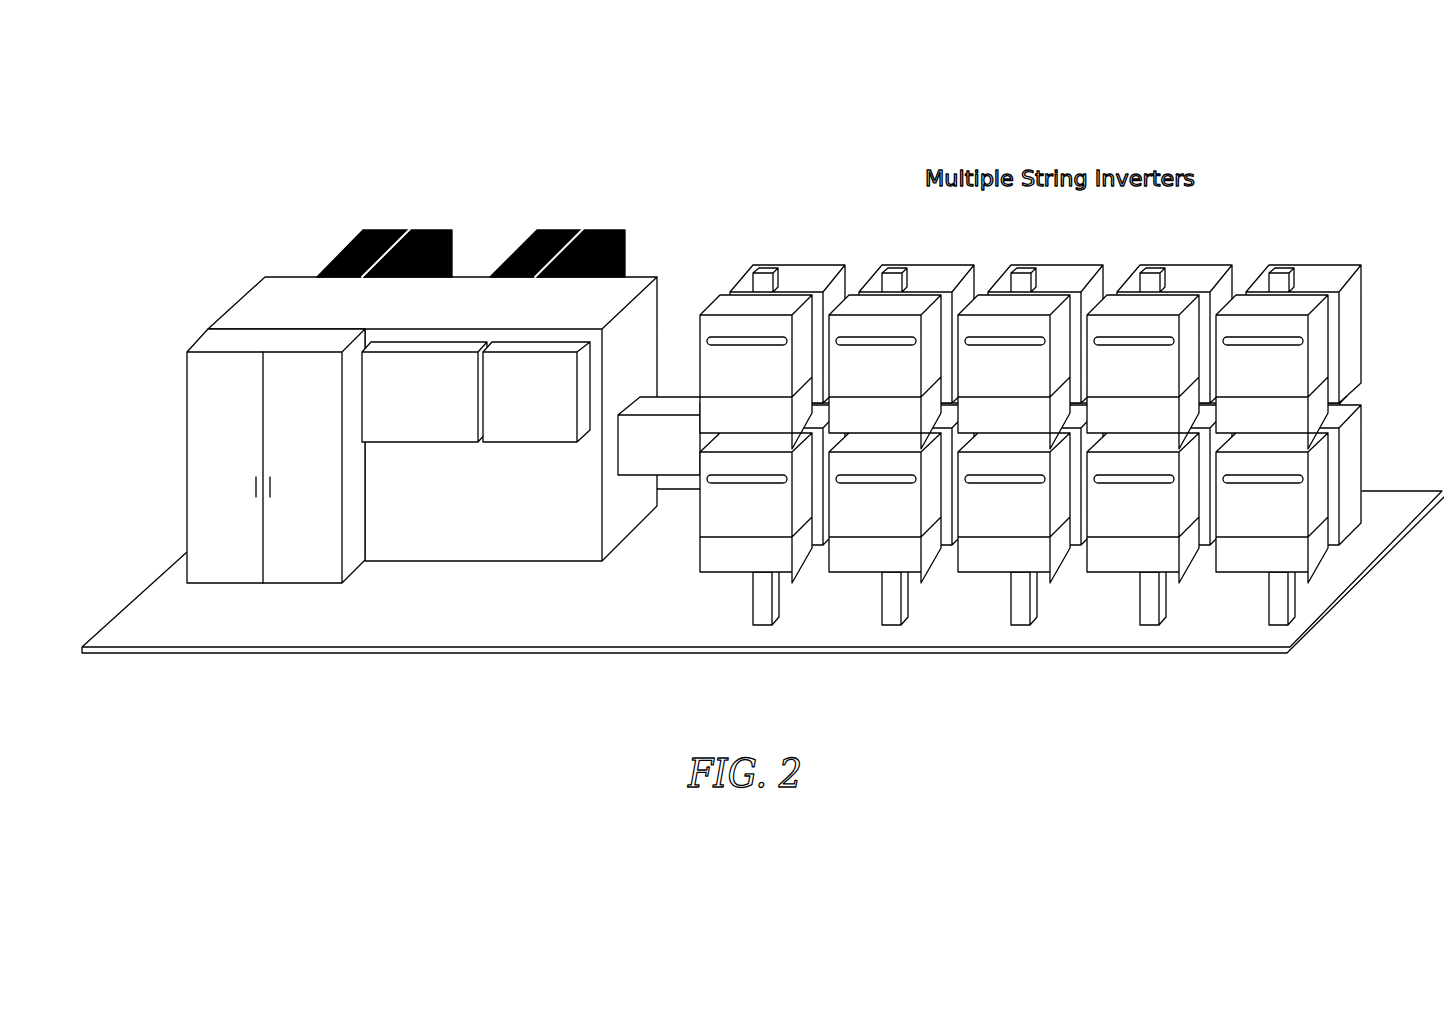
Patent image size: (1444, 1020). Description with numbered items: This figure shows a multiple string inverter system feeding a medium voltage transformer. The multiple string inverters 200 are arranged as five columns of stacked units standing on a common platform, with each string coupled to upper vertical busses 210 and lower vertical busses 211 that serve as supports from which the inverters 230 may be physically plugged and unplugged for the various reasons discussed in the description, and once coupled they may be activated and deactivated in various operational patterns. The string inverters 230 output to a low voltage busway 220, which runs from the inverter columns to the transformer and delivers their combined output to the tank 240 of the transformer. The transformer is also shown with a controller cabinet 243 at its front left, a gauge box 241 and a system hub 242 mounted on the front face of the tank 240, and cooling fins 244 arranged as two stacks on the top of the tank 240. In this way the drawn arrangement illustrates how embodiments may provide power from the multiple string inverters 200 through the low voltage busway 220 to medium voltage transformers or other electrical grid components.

The multiple string inverters 200 is at (1152, 94).
The upper vertical busses 210 is at (1290, 268).
The lower vertical busses 211 is at (1282, 610).
The LV busway 220 is at (675, 490).
The string inverters 230 is at (1355, 307).
The tank 240 is at (527, 314).
The gauge box 241 is at (448, 425).
The system hub 242 is at (548, 425).
The controller cabinet 243 is at (213, 412).
The cooling fins 244 is at (432, 230).